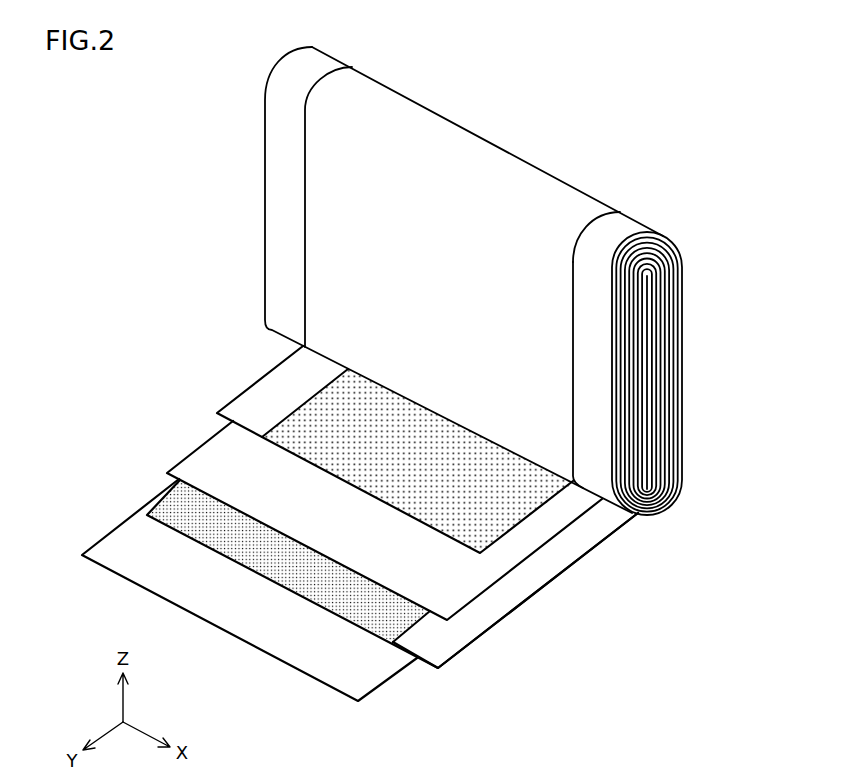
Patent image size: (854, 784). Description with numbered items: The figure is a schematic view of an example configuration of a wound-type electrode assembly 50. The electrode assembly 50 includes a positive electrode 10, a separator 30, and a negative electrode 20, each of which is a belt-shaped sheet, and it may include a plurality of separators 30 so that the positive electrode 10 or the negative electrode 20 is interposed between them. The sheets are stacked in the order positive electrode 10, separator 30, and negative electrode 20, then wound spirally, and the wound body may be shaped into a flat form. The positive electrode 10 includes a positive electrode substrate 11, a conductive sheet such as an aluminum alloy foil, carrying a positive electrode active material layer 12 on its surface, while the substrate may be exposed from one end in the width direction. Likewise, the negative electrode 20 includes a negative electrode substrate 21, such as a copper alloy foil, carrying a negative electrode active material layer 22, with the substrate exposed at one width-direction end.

The electrode assembly 50 is at (655, 163).
The positive electrode 10 is at (186, 333).
The positive electrode substrate 11 is at (297, 375).
The positive electrode active material layer 12 is at (310, 422).
The negative electrode 20 is at (578, 712).
The negative electrode substrate 21 is at (507, 597).
The negative electrode active material layer 22 is at (367, 610).
The separator 30 is at (132, 548).